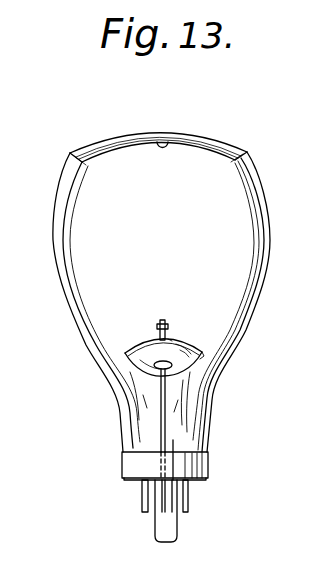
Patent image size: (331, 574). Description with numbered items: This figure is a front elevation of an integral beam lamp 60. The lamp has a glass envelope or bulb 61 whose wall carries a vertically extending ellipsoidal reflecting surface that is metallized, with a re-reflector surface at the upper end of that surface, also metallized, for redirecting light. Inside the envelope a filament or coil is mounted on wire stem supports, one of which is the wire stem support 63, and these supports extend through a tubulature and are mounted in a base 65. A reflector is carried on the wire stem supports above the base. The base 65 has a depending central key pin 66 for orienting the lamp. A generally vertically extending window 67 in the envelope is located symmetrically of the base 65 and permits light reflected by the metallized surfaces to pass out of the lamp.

The integral beam lamp 60 is at (265, 137).
The glass envelope 61 is at (61, 170).
The window 67 is at (190, 227).
The wire stem support 63 is at (166, 427).
The base 65 is at (208, 463).
The central key pin 66 is at (178, 527).